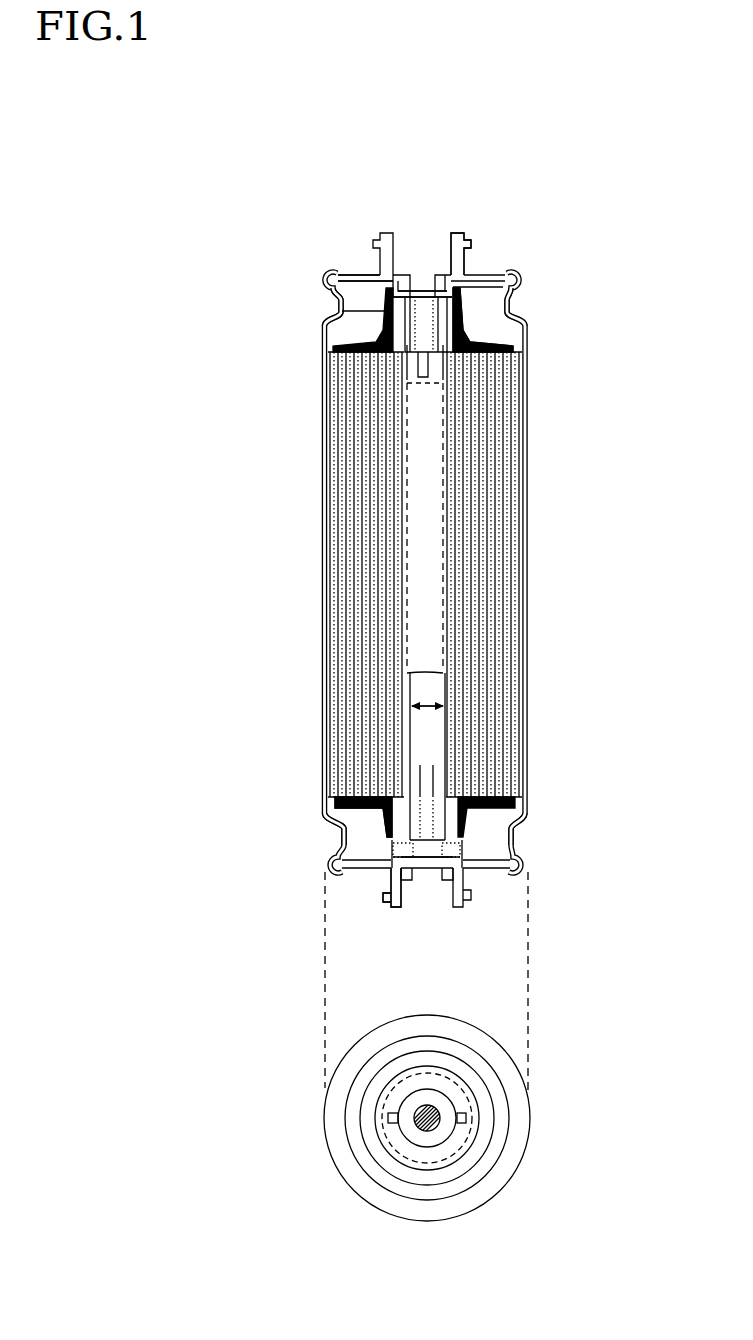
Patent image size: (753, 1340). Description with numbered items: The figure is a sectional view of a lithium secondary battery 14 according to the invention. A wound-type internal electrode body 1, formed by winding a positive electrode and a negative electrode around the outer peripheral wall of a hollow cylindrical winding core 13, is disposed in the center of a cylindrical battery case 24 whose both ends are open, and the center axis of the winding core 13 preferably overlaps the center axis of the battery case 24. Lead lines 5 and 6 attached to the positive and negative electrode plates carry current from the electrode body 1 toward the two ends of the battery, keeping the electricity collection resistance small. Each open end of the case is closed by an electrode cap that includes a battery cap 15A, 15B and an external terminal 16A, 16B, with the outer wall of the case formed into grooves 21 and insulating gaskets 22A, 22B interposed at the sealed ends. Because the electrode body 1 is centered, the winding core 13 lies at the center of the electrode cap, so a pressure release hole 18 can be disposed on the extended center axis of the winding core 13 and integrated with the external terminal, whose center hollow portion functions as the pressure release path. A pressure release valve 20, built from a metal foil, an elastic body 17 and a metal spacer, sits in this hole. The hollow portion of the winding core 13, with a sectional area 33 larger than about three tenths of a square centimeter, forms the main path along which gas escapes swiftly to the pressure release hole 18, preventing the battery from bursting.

The wound-type internal electrode body 1 is at (500, 614).
The lead line 5 is at (380, 838).
The lead line 6 is at (465, 323).
The winding core 13 is at (405, 487).
The lithium secondary battery 14 is at (490, 218).
The battery cap 15A is at (517, 868).
The battery cap 15B is at (340, 275).
The external terminal 16A is at (383, 884).
The external terminal 16B is at (478, 256).
The elastic body 17 is at (352, 272).
The pressure release hole 18 is at (421, 325).
The pressure release valve 20 is at (430, 270).
The groove of case 21 is at (526, 300).
The negative electrode insulating gasket 22A is at (466, 823).
The positive electrode insulating gasket 22B is at (345, 312).
The battery case 24 is at (322, 573).
The winding core hollow portion's sectional area 33 is at (426, 714).